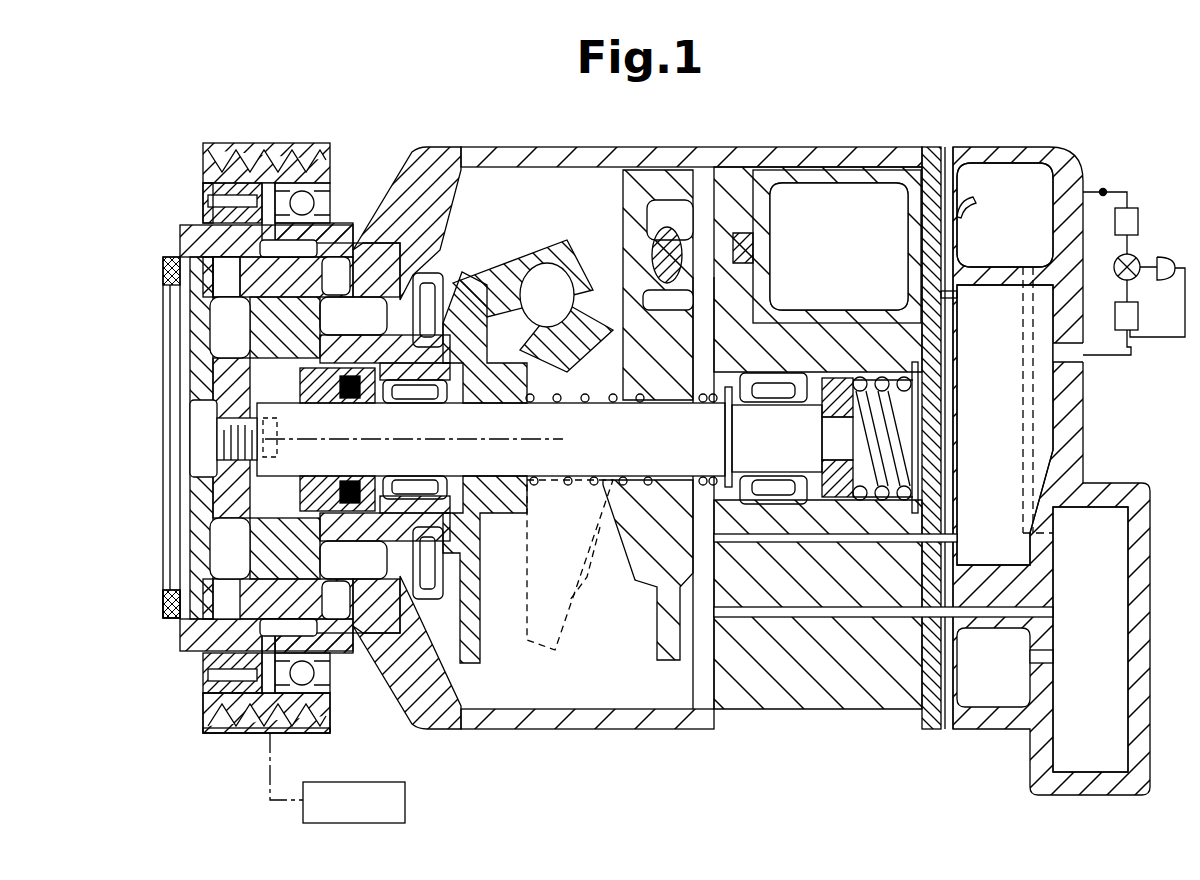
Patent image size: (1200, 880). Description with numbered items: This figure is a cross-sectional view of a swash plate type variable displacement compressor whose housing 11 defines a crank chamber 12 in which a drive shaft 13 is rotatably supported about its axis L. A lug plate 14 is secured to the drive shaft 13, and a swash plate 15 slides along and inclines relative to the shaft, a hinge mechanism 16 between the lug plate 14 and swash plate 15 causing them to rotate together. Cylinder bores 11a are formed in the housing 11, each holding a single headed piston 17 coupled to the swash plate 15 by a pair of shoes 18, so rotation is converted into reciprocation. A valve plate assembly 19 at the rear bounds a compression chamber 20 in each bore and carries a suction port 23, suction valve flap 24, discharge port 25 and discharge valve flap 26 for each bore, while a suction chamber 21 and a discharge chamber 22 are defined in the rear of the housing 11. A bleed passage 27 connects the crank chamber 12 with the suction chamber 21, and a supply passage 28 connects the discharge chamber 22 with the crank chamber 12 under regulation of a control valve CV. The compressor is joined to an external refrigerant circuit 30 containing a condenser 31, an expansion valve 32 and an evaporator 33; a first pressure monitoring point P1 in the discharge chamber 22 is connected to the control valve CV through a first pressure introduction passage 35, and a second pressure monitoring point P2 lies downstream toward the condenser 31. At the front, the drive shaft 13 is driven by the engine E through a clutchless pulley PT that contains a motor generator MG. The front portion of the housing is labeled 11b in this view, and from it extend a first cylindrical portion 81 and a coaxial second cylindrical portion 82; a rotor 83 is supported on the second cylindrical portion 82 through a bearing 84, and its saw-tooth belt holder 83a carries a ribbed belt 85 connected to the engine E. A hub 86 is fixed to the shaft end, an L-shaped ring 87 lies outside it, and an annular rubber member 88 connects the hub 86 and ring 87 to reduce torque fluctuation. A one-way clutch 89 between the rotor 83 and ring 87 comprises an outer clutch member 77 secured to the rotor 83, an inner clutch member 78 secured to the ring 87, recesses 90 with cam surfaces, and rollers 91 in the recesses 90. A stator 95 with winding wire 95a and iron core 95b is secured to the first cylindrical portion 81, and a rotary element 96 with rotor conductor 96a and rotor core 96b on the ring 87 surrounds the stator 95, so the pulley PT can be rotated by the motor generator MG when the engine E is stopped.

The housing 11 is at (700, 729).
The cylinder bore 11a is at (820, 175).
The front housing 11b is at (416, 158).
The crank chamber 12 is at (616, 696).
The drive shaft 13 is at (582, 470).
The lug plate 14 is at (462, 272).
The swash plate 15 is at (557, 633).
The hinge mechanism 16 is at (519, 245).
The single headed piston 17 is at (728, 200).
The shoes 18 is at (683, 180).
The valve plate assembly 19 is at (937, 165).
The compression chamber 20 is at (912, 168).
The suction chamber 21 is at (980, 406).
The discharge chamber 22 is at (1045, 254).
The suction port 23 is at (950, 296).
The suction valve flap 24 is at (920, 274).
The discharge port 25 is at (918, 208).
The discharge valve flap 26 is at (965, 197).
The bleed passage 27 is at (790, 543).
The supply passage 28 is at (814, 618).
The external refrigerant circuit 30 is at (1135, 227).
The condenser 31 is at (1138, 212).
The expansion valve 32 is at (1137, 256).
The evaporator 33 is at (1138, 316).
The first pressure introduction passage 35 is at (1033, 450).
The outer clutch member 77 is at (205, 695).
The inner clutch member 78 is at (203, 660).
The first cylindrical portion 81 is at (290, 380).
The second cylindrical portion 82 is at (305, 645).
The rotor 83 is at (332, 165).
The belt holder 83a is at (323, 735).
The bearing 84 is at (330, 205).
The ribbed belt 85 is at (270, 757).
The hub 86 is at (190, 497).
The ring 87 is at (183, 236).
The rubber member 88 is at (170, 612).
The one-way clutch 89 is at (199, 176).
The recesses 90 is at (228, 168).
The roller 91 is at (205, 200).
The stator 95 is at (166, 387).
The winding wire 95a is at (222, 337).
The iron core 95b is at (257, 355).
The rotary element 96 is at (130, 435).
The rotor conductor 96a is at (178, 262).
The rotor core 96b is at (225, 285).
The control valve CV is at (1090, 639).
The engine E is at (405, 800).
The axis L is at (546, 405).
The motor generator MG is at (204, 575).
The first pressure monitoring point P1 is at (1005, 215).
The second pressure monitoring point P2 is at (1103, 190).
The pulley PT is at (195, 739).